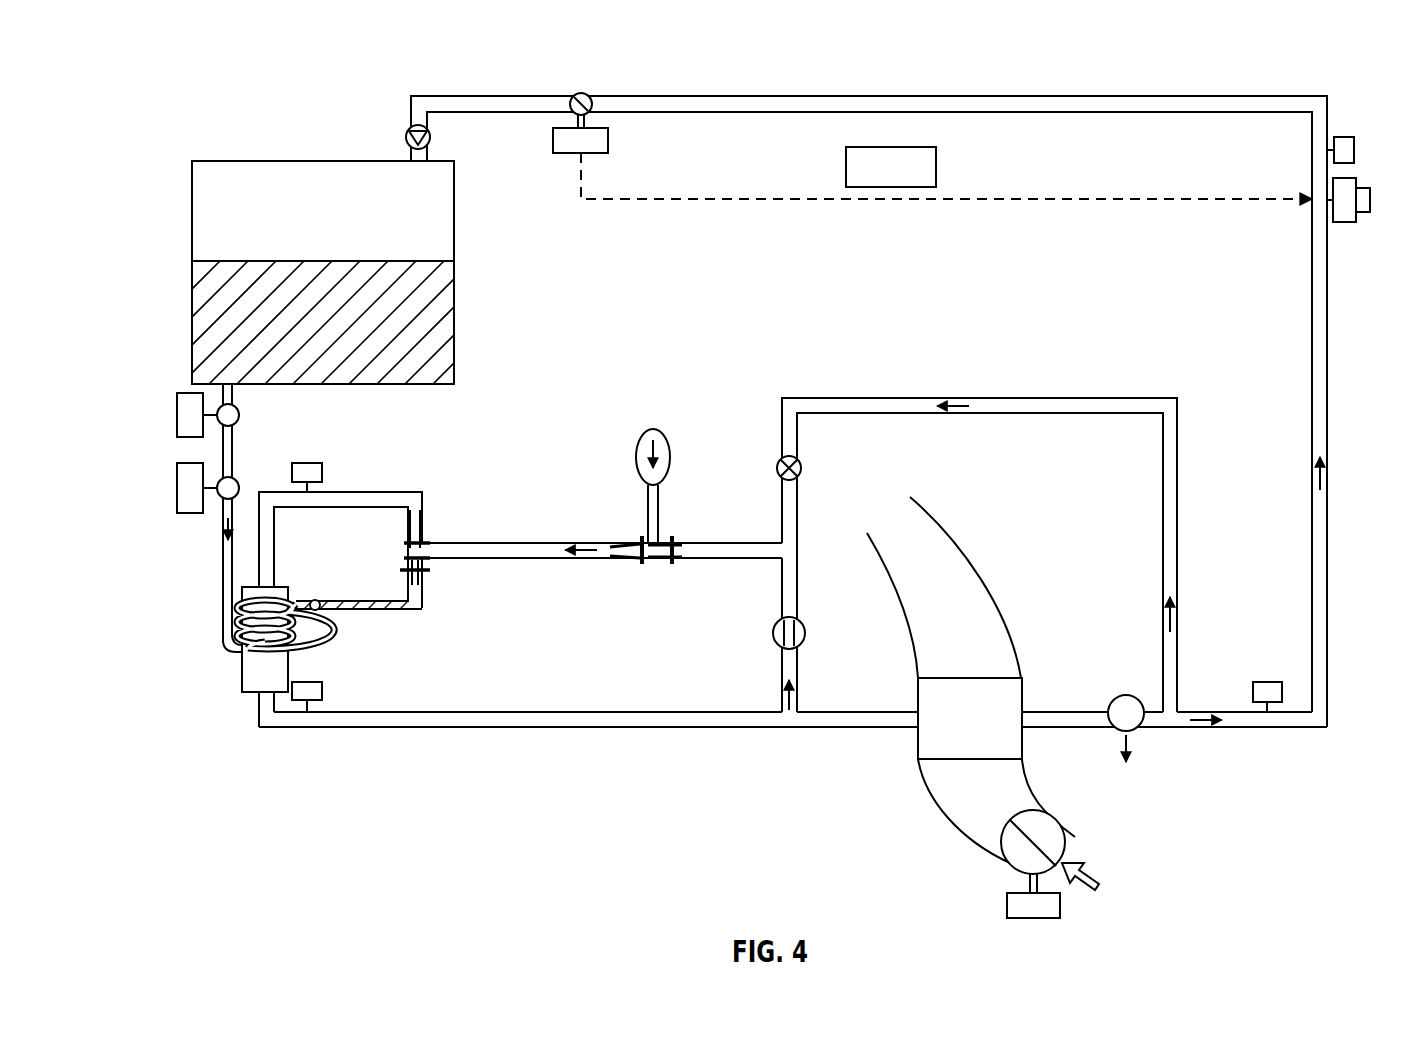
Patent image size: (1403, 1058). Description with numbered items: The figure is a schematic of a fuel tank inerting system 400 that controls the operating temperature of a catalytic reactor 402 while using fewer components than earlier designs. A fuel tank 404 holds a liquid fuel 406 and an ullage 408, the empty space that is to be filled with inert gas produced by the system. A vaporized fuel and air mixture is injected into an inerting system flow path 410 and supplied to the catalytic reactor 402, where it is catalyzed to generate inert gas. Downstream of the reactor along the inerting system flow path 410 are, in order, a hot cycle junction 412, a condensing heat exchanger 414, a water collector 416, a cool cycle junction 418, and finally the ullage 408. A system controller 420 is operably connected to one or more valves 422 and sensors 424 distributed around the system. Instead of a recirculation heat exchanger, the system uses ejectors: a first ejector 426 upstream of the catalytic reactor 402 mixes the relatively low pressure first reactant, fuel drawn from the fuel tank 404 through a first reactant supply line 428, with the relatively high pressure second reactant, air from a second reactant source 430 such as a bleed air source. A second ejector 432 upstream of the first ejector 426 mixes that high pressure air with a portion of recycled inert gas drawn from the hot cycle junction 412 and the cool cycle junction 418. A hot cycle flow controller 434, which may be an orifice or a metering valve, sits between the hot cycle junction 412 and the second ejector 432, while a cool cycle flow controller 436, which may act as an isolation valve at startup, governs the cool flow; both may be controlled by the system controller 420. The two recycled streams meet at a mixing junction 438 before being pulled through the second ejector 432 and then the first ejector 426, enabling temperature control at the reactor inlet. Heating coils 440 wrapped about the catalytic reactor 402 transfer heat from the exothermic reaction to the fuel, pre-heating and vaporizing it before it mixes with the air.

The inerting system 400 is at (282, 80).
The catalytic reactor 402 is at (256, 677).
The fuel tank 404 is at (455, 293).
The fuel 406 is at (202, 327).
The ullage 408 is at (322, 180).
The inerting system flow path 410 is at (1103, 97).
The hot cycle junction 412 is at (793, 746).
The condensing heat exchanger 414 is at (1024, 712).
The water collector 416 is at (1140, 730).
The cool cycle junction 418 is at (1186, 706).
The system controller 420 is at (918, 172).
The valves 422 is at (599, 138).
The sensors 424 is at (1343, 223).
The first ejector 426 is at (437, 577).
The first reactant supply line 428 is at (394, 608).
The second reactant source 430 is at (637, 455).
The second ejector 432 is at (657, 571).
The hot cycle flow controller 434 is at (773, 638).
The cool cycle flow controller 436 is at (778, 463).
The mixing junction 438 is at (799, 554).
The heating coils 440 is at (250, 653).